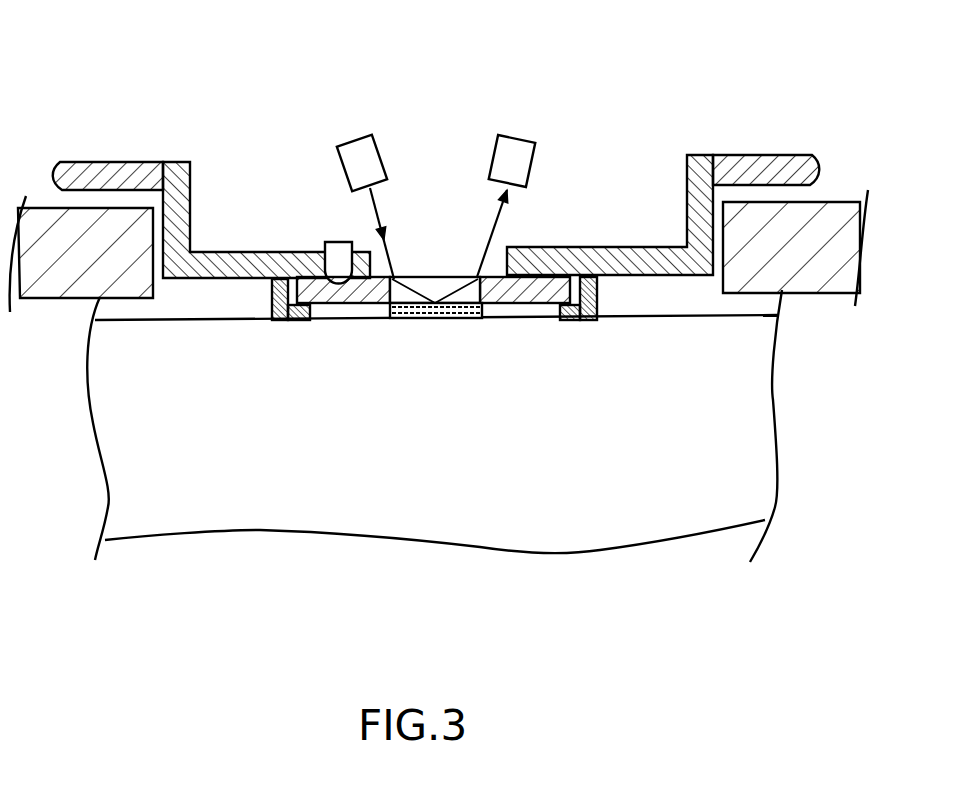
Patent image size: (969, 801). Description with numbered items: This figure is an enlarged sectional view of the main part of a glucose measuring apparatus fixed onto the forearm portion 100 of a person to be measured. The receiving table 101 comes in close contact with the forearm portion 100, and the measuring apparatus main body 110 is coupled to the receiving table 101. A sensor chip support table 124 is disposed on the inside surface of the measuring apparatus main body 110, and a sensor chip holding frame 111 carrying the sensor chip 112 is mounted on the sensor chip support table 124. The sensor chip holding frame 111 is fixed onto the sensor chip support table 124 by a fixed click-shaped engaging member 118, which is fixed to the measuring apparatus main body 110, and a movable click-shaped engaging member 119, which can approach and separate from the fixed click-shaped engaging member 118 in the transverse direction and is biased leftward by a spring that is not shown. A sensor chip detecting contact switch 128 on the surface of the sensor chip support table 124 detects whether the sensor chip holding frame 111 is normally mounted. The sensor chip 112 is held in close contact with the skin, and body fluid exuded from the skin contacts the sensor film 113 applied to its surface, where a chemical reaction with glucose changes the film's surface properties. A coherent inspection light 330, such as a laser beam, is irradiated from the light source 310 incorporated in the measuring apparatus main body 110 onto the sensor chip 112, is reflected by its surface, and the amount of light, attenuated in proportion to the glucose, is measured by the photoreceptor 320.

The forearm portion 100 is at (263, 513).
The receiving table 101 is at (52, 290).
The measuring apparatus main body 110 is at (118, 162).
The sensor chip holding frame 111 is at (348, 305).
The sensor chip 112 is at (462, 302).
The sensor film 113 is at (410, 318).
The fixed click-shaped engaging member 118 is at (288, 322).
The movable click-shaped engaging member 119 is at (585, 322).
The sensor chip support table 124 is at (190, 207).
The sensor chip detecting contact switch 128 is at (328, 248).
The light source 310 is at (360, 150).
The photoreceptor 320 is at (515, 150).
The inspection light 330 is at (380, 213).